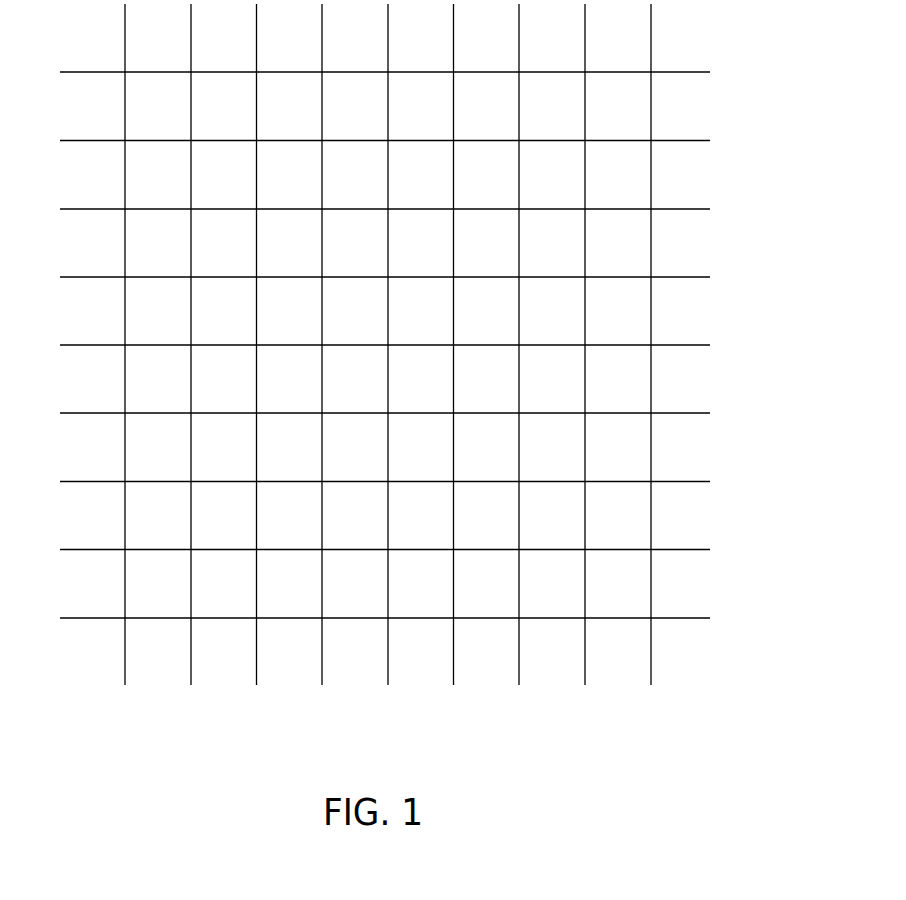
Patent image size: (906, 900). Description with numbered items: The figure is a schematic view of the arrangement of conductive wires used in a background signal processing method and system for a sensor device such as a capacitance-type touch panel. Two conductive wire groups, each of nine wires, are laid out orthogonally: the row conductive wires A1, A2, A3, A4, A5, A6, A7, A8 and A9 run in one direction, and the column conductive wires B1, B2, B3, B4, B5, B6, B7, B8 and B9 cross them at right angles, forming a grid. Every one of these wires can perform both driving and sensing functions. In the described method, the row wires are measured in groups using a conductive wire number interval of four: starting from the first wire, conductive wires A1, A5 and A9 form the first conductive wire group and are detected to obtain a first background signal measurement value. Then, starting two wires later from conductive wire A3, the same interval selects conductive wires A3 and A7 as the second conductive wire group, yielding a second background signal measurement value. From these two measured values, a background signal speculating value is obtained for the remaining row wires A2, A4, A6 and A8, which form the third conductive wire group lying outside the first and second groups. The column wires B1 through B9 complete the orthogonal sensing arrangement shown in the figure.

The conductive wire A1 is at (125, 359).
The conductive wire A2 is at (191, 359).
The conductive wire A3 is at (256, 359).
The conductive wire A4 is at (322, 359).
The conductive wire A5 is at (388, 359).
The conductive wire A6 is at (453, 359).
The conductive wire A7 is at (519, 359).
The conductive wire A8 is at (585, 359).
The conductive wire A9 is at (651, 359).
The conductive wire B1 is at (403, 73).
The conductive wire B2 is at (403, 142).
The conductive wire B3 is at (403, 210).
The conductive wire B4 is at (403, 278).
The conductive wire B5 is at (403, 346).
The conductive wire B6 is at (403, 414).
The conductive wire B7 is at (403, 483).
The conductive wire B8 is at (403, 551).
The conductive wire B9 is at (403, 619).